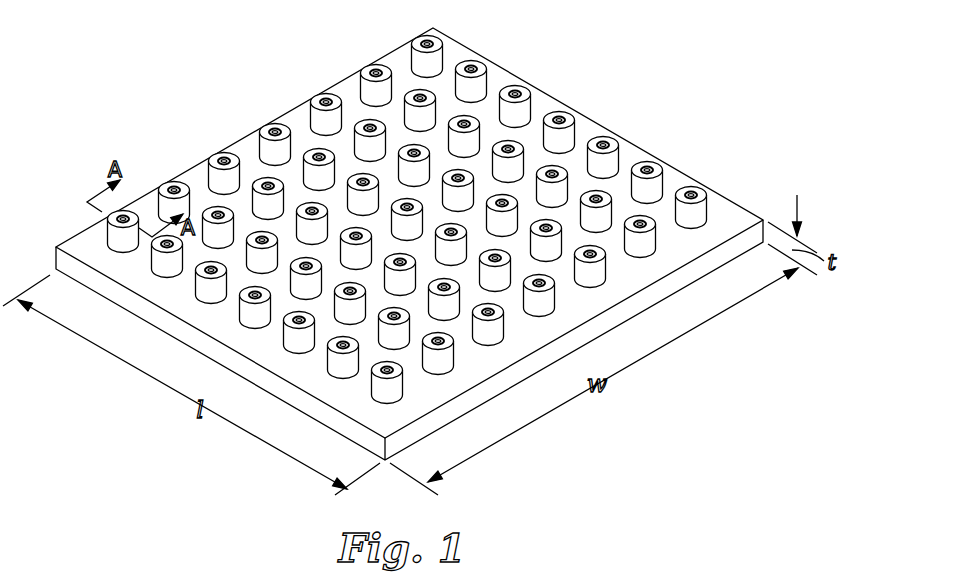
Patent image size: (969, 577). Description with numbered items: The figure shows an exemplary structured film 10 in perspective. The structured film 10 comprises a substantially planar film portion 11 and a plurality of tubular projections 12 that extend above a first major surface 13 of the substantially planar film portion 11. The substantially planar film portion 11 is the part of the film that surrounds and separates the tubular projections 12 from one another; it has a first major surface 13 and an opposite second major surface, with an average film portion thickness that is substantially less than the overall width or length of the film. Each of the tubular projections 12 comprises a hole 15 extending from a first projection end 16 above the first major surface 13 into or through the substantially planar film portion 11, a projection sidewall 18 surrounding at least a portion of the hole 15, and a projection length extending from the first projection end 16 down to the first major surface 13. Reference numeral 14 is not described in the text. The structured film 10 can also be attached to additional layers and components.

The structured film 10 is at (409, 234).
The substantially planar film portion 11 is at (409, 244).
The tubular projections 12 is at (407, 225).
The first major surface 13 is at (175, 299).
The side edge of plate 14 is at (438, 423).
The hole 15 is at (272, 131).
The first projection end 16 is at (186, 184).
The projection sidewall 18 is at (433, 60).